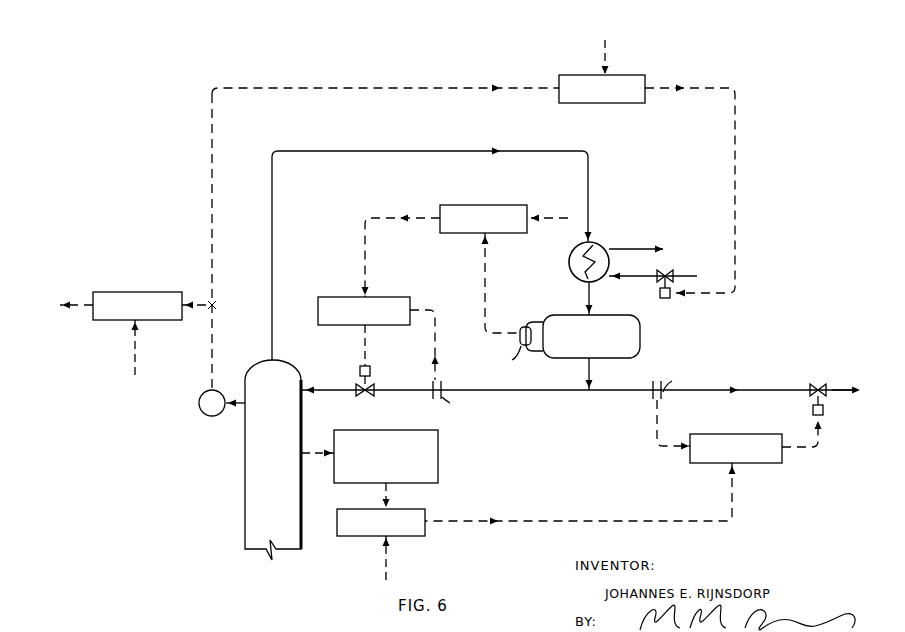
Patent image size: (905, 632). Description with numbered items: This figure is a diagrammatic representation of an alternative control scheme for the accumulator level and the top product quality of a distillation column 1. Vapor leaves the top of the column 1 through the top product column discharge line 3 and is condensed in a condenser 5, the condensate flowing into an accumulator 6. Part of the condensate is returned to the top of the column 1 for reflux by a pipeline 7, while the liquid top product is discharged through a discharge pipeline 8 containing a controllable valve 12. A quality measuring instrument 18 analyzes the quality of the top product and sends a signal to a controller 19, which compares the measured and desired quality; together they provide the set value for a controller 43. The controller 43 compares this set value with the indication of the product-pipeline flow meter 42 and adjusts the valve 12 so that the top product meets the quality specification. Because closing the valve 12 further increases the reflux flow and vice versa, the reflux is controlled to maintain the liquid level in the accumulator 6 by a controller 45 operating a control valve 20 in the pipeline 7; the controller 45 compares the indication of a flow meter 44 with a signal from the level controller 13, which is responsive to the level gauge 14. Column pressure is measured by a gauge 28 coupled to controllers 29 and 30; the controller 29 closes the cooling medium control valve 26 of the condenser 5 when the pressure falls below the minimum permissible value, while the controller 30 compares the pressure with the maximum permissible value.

The column 1 is at (275, 483).
The top product column discharge line 3 is at (323, 151).
The condenser 5 is at (571, 252).
The accumulator 6 is at (617, 316).
The pipeline 7 is at (506, 392).
The discharge pipeline 8 is at (838, 393).
The controllable valve 12 is at (813, 386).
The controller 13 is at (505, 205).
The level gauge 14 is at (522, 327).
The quality measuring instrument 18 is at (357, 430).
The controller 19 is at (409, 537).
The control valve 20 is at (357, 385).
The control valve 26 is at (672, 274).
The gauge 28 is at (210, 418).
The controller 29 is at (639, 75).
The controller 30 is at (160, 292).
The product-pipeline flow meter 42 is at (651, 397).
The controller 43 is at (758, 464).
The flow meter 44 is at (431, 383).
The controller 45 is at (385, 297).